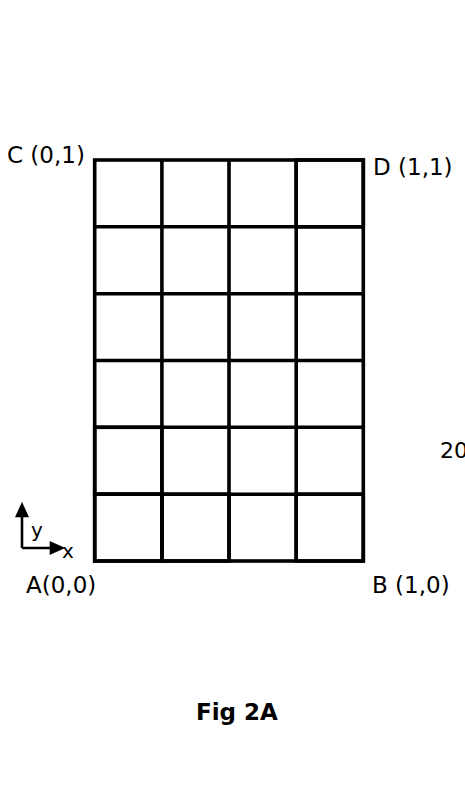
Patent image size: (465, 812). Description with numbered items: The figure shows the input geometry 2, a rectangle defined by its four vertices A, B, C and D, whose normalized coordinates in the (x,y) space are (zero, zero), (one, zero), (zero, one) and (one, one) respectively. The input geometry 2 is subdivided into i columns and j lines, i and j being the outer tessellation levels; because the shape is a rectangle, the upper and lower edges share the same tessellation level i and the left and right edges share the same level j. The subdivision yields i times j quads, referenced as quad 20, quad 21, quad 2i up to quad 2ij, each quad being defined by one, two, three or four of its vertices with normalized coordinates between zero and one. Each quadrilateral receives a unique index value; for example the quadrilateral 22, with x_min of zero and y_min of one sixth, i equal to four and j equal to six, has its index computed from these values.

The input geometry 2 is at (144, 148).
The quad 2ij is at (337, 180).
The quadrilateral 22 is at (103, 477).
The quad 20 is at (113, 554).
The quadrilateral 21 is at (208, 554).
The quad 2i is at (318, 554).